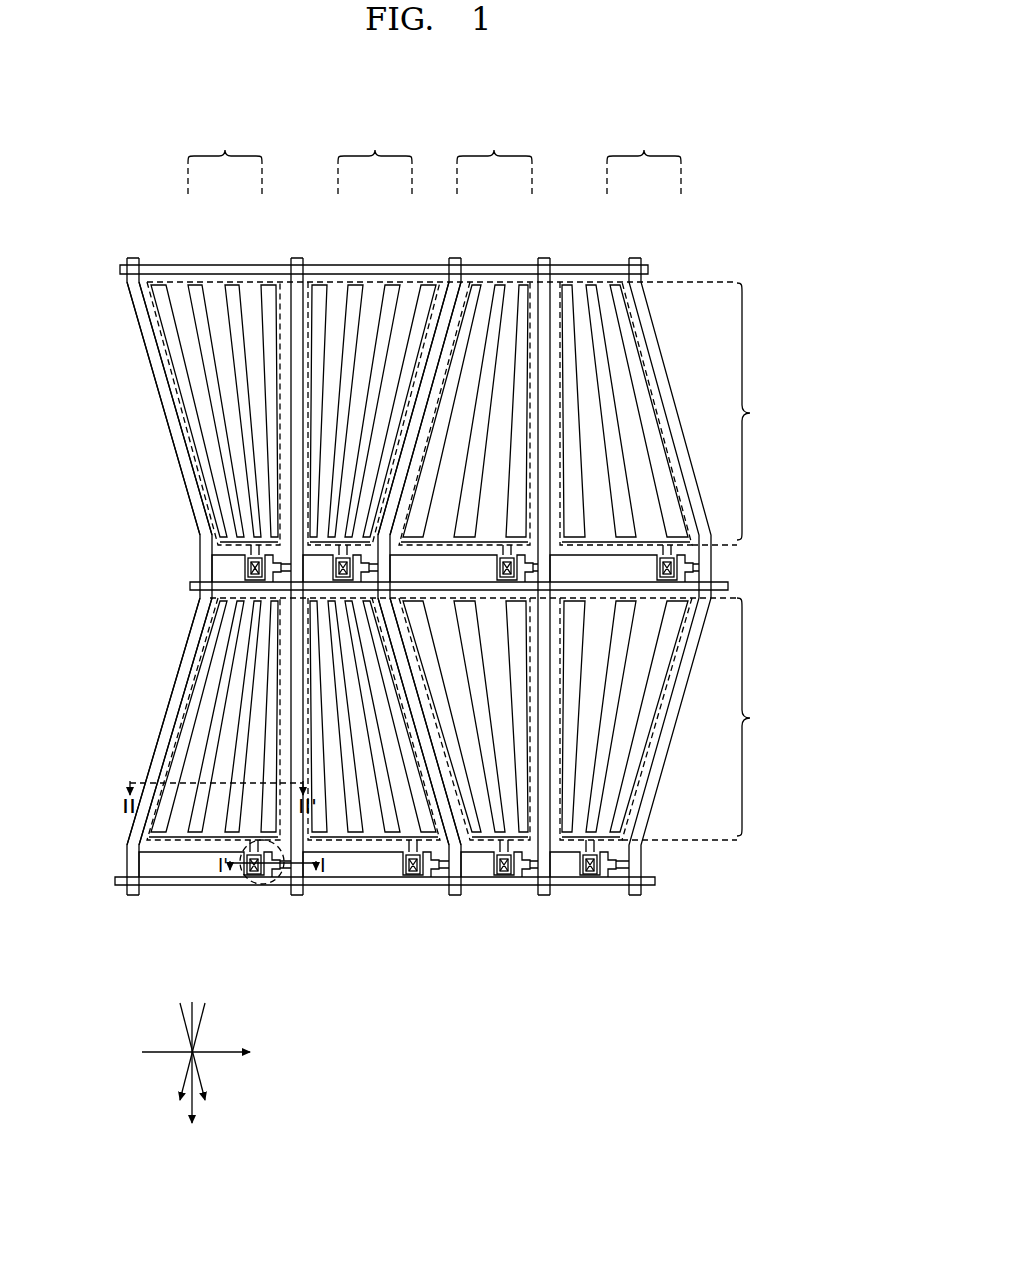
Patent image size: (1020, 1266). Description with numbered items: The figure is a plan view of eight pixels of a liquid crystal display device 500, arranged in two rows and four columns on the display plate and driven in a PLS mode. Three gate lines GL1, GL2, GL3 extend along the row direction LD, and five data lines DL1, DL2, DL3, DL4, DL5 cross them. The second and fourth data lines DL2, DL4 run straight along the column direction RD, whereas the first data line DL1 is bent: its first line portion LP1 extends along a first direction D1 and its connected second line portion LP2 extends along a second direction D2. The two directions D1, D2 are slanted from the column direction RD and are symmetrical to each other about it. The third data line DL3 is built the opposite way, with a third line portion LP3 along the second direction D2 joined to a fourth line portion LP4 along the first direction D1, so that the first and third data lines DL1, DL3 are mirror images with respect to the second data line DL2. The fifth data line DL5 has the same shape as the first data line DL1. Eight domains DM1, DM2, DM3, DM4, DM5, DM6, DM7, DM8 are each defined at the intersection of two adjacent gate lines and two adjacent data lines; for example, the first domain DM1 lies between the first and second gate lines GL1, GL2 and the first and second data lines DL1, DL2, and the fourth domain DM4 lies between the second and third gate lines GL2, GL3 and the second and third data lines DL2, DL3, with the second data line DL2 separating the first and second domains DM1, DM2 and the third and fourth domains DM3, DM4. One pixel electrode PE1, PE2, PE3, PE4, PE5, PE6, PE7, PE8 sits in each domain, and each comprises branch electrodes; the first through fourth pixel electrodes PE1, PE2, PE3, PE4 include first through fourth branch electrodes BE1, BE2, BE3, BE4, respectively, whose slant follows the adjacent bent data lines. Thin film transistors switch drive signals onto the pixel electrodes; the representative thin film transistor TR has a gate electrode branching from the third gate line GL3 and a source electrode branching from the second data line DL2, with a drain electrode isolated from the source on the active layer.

The liquid crystal display device 500 is at (726, 184).
The first gate line GL1 is at (650, 270).
The second gate line GL2 is at (730, 585).
The third gate line GL3 is at (655, 881).
The first data line DL1 is at (133, 897).
The second data line DL2 is at (297, 897).
The third data line DL3 is at (452, 897).
The fourth data line DL4 is at (544, 897).
The fifth data line DL5 is at (635, 897).
The first line portion LP1 is at (197, 501).
The second line portion LP2 is at (190, 644).
The third line portion LP3 is at (442, 327).
The fourth line portion LP4 is at (446, 810).
The first pixel electrode PE1 is at (92, 388).
The second pixel electrode PE2 is at (430, 212).
The third pixel electrode PE3 is at (92, 711).
The fourth pixel electrode PE4 is at (400, 835).
The fifth pixel electrode PE5 is at (512, 283).
The sixth pixel electrode PE6 is at (598, 283).
The seventh pixel electrode PE7 is at (523, 800).
The eighth pixel electrode PE8 is at (600, 800).
The first branch electrodes BE1 is at (222, 424).
The second branch electrodes BE2 is at (392, 283).
The third branch electrodes BE3 is at (178, 753).
The fourth branch electrodes BE4 is at (420, 800).
The first domain DM1 is at (196, 464).
The second domain DM2 is at (327, 283).
The third domain DM3 is at (193, 684).
The fourth domain DM4 is at (348, 800).
The fifth domain DM5 is at (482, 283).
The sixth domain DM6 is at (562, 283).
The seventh domain DM7 is at (477, 820).
The eighth domain DM8 is at (575, 805).
The thin film transistor TR is at (262, 886).
The row direction LD is at (211, 1052).
The column direction RD is at (196, 1108).
The first direction D1 is at (200, 1078).
The second direction D2 is at (185, 1078).